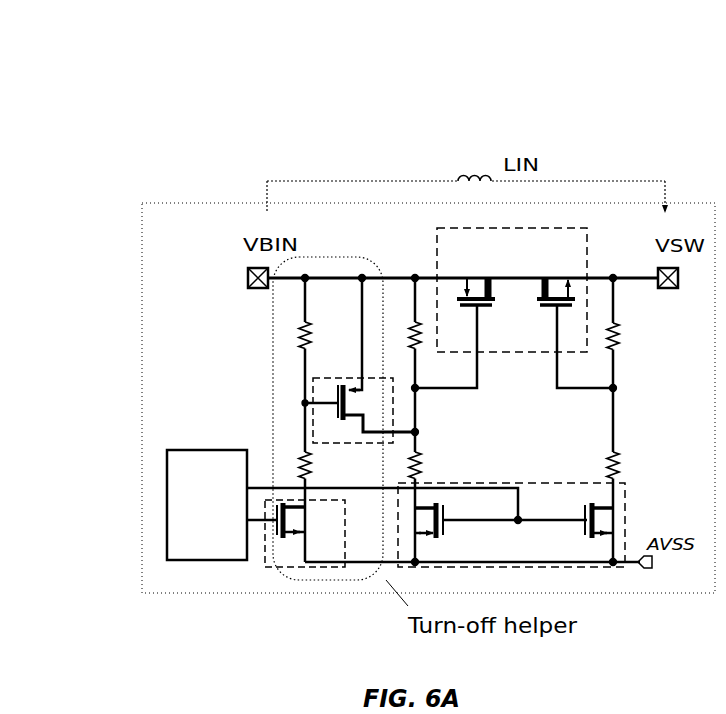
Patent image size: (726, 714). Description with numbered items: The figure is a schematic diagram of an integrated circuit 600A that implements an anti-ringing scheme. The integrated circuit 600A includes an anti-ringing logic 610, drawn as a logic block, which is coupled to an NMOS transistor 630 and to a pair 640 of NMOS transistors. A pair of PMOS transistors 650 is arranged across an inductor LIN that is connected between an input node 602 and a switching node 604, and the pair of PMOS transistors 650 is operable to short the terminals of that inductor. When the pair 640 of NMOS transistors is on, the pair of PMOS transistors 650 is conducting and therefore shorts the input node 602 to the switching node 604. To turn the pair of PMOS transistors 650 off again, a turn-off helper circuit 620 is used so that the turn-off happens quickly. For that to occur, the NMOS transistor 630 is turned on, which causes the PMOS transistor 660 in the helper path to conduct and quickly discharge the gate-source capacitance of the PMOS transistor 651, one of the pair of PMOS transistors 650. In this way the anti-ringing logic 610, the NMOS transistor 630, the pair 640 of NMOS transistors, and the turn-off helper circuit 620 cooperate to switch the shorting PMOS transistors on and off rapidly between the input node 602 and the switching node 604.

The integrated circuit 600A is at (172, 119).
The input node 602 is at (249, 297).
The switching node 604 is at (662, 297).
The anti-ringing logic 610 is at (204, 444).
The turn-off helper circuit 620 is at (326, 245).
The NMOS transistor 630 is at (332, 572).
The pair of NMOS transistors 640 is at (638, 490).
The pair of PMOS transistors 650 is at (537, 256).
The PMOS transistor 651 is at (475, 278).
The PMOS transistor 660 is at (343, 366).